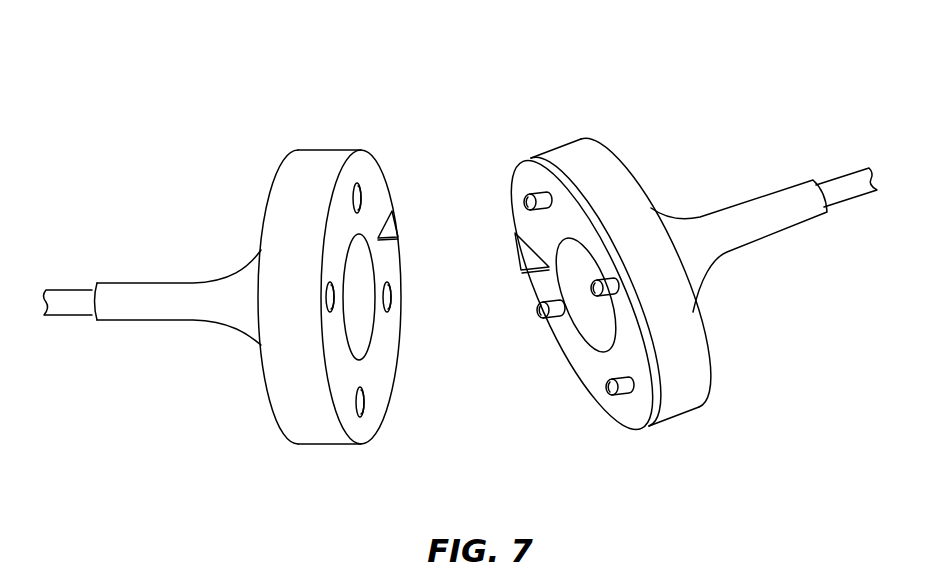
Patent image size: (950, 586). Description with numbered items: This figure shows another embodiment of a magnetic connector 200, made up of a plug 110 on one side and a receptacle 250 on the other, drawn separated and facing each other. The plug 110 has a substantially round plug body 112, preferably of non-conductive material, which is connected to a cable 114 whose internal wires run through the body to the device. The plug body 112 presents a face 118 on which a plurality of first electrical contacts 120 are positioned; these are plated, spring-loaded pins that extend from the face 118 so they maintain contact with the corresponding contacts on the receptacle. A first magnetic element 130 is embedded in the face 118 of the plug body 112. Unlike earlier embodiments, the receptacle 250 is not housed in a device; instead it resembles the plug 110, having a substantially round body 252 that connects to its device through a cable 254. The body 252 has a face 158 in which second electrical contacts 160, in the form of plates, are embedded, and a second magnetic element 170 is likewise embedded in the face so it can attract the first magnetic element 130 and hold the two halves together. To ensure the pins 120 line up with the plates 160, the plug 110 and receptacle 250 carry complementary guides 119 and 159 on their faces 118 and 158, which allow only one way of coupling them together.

The magnetic connector 200 is at (840, 79).
The plug 110 is at (700, 154).
The plug body 112 is at (600, 140).
The cable 114 is at (856, 170).
The face 118 is at (623, 435).
The guide 119 is at (523, 262).
The first electrical contacts 120 is at (540, 318).
The first magnetic element 130 is at (574, 357).
The receptacle 250 is at (188, 191).
The body 252 is at (285, 160).
The cable 254 is at (82, 288).
The face 158 is at (382, 370).
The guide 159 is at (396, 217).
The second electrical contacts 160 is at (391, 294).
The second magnetic element 170 is at (377, 270).